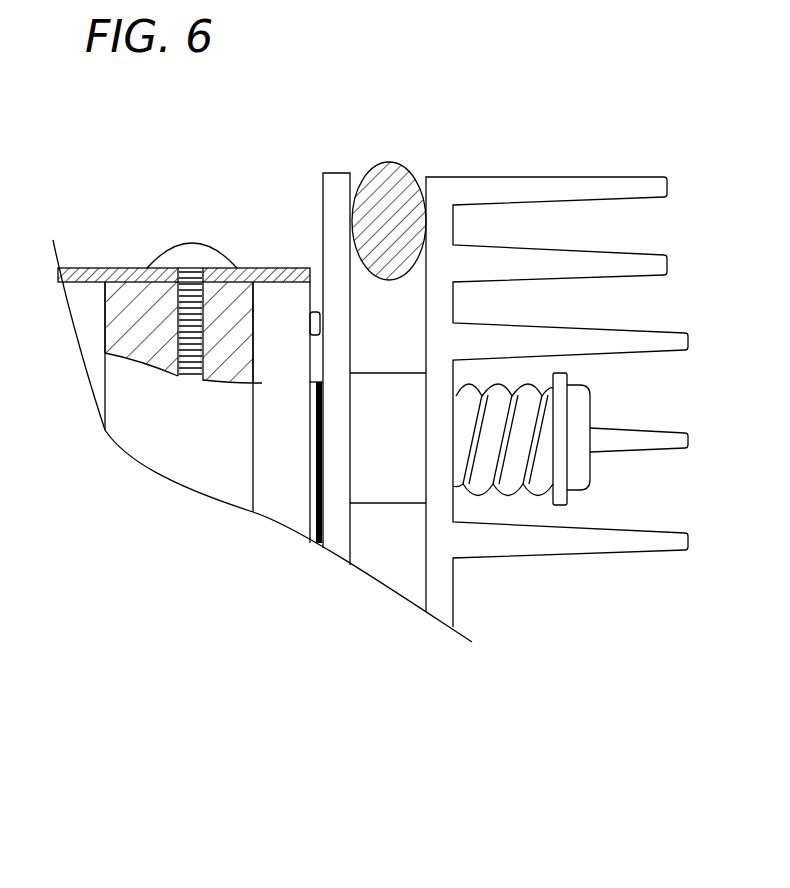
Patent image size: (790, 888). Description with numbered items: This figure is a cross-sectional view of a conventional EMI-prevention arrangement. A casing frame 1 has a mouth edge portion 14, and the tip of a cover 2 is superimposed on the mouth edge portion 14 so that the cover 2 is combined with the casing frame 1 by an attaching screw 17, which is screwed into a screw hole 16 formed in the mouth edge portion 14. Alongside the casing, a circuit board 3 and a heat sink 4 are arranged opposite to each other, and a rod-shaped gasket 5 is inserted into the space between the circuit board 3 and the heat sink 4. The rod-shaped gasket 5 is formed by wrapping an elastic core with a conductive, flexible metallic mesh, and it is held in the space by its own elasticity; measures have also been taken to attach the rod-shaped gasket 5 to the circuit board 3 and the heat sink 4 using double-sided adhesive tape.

The casing frame 1 is at (228, 488).
The cover 2 is at (88, 267).
The circuit board 3 is at (330, 202).
The heat sink 4 is at (600, 177).
The rod-shaped gasket 5 is at (370, 160).
The mouth edge portion 14 is at (133, 267).
The screw hole 16 is at (178, 380).
The attaching screw 17 is at (190, 247).